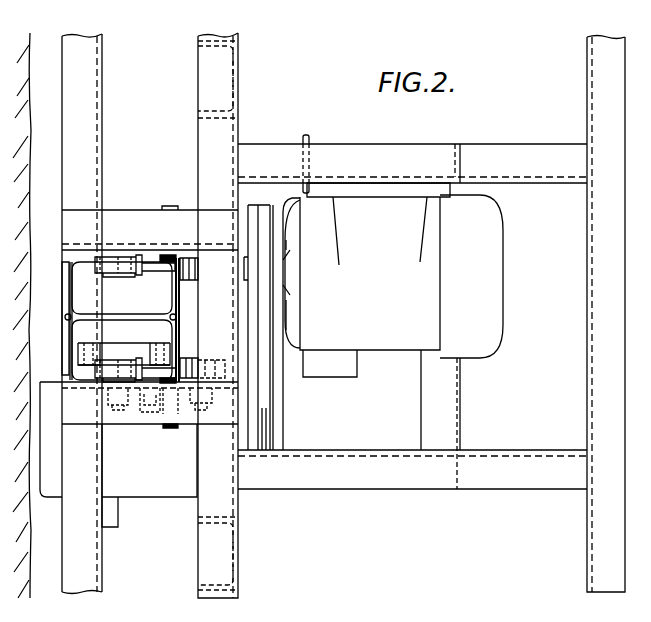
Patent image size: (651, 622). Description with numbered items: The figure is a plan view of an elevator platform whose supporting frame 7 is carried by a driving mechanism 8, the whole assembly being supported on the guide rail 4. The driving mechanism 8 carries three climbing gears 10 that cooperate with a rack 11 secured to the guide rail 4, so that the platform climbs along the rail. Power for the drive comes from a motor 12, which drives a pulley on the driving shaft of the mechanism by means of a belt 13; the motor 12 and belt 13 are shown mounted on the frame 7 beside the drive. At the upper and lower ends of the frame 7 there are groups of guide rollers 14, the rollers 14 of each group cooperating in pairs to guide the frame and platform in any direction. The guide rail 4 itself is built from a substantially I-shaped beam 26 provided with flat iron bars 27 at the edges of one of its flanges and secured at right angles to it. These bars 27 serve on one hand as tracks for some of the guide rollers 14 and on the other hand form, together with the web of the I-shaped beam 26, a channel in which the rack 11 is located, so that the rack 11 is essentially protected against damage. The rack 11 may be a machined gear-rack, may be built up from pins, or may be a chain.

The guide rail 4 is at (57, 331).
The supporting frame 7 is at (247, 512).
The driving mechanism 8 is at (159, 490).
The climbing gears 10 is at (103, 348).
The rack 11 is at (166, 348).
The motor 12 is at (378, 355).
The belt 13 is at (268, 378).
The guide rollers 14 is at (170, 206).
The I-shaped beam 26 is at (62, 283).
The flat iron bars 27 is at (151, 261).